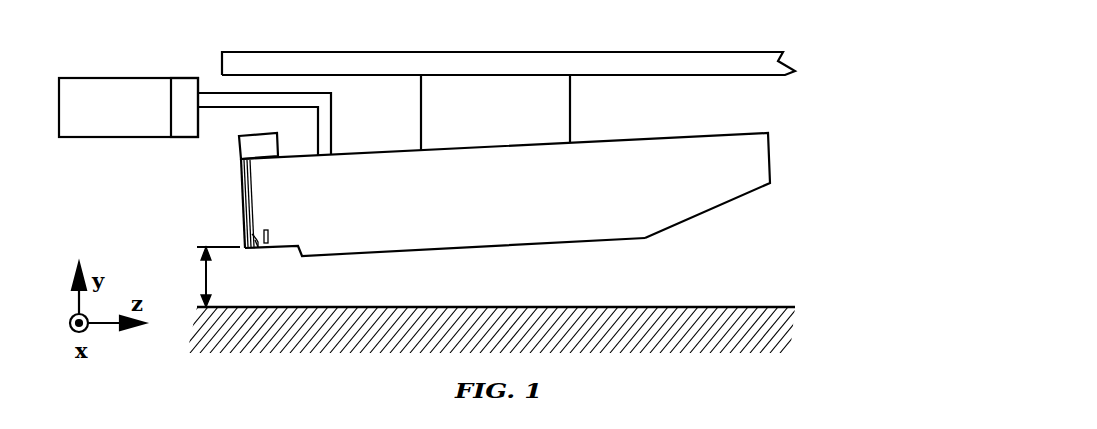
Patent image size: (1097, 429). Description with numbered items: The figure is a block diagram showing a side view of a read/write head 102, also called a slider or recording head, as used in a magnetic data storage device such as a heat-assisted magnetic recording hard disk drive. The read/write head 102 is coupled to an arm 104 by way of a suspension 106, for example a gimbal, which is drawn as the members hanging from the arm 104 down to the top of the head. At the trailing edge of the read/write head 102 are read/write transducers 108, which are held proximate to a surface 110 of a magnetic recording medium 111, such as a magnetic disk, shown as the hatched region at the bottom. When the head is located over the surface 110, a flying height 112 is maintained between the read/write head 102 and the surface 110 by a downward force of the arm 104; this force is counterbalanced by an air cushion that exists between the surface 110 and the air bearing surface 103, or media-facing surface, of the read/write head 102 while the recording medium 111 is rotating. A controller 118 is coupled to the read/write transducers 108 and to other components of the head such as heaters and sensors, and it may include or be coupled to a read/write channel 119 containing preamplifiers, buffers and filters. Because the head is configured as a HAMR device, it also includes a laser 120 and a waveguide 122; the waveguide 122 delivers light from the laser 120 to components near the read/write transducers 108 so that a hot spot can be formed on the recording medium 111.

The read/write head 102 is at (681, 141).
The air bearing surface 103 is at (385, 253).
The arm 104 is at (724, 57).
The suspension 106 is at (572, 105).
The read/write transducers 108 is at (243, 230).
The surface 110 is at (683, 306).
The magnetic recording medium 111 is at (695, 343).
The flying height 112 is at (203, 277).
The controller 118 is at (108, 78).
The read/write channel 119 is at (176, 78).
The laser 120 is at (258, 141).
The waveguide 122 is at (246, 181).